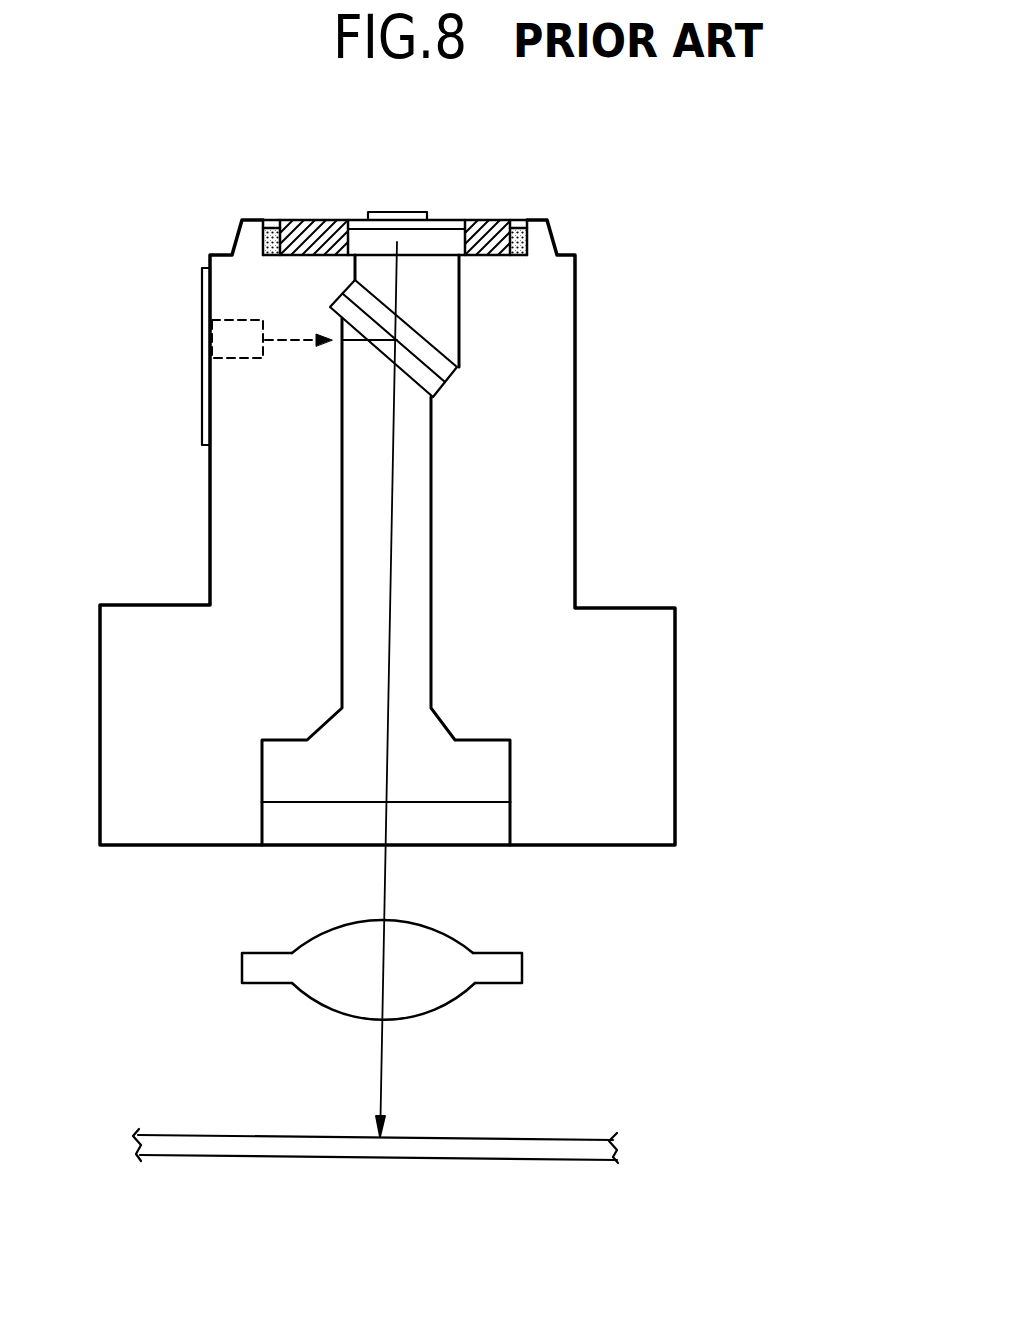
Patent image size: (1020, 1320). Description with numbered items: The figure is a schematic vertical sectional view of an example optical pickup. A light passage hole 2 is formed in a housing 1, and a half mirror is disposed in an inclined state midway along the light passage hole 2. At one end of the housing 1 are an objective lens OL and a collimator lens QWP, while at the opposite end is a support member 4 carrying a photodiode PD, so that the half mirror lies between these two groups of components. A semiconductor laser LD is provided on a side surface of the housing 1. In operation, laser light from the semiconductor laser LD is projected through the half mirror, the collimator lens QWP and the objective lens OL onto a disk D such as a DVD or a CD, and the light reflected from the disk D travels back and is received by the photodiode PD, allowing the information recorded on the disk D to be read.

The housing 1 is at (222, 514).
The light passage hole 2 is at (432, 549).
The support member 4 is at (490, 219).
The photodiode PD is at (402, 210).
The semiconductor laser LD is at (240, 347).
The collimator lens QWP is at (493, 827).
The objective lens OL is at (437, 950).
The disk D is at (490, 1162).